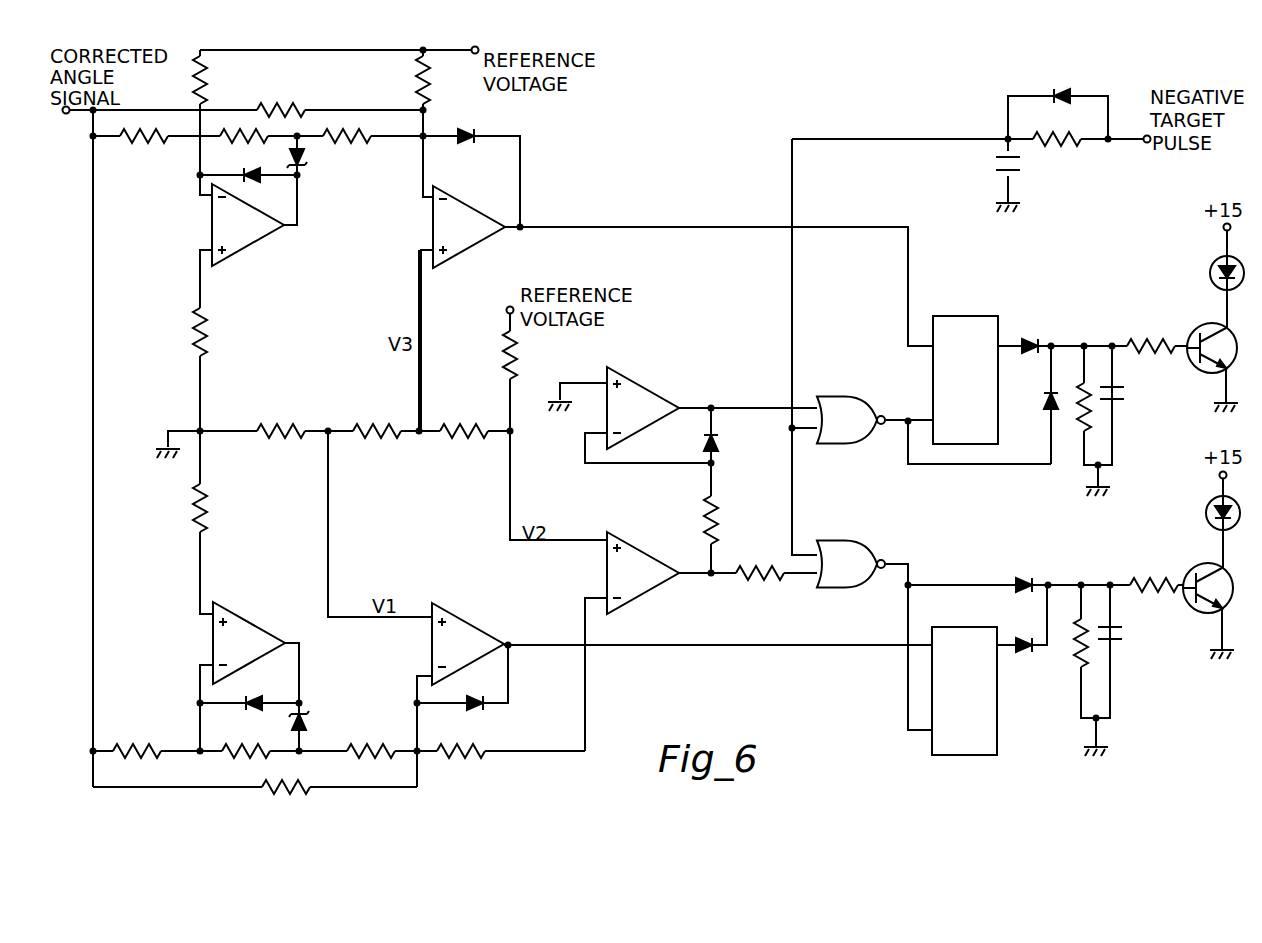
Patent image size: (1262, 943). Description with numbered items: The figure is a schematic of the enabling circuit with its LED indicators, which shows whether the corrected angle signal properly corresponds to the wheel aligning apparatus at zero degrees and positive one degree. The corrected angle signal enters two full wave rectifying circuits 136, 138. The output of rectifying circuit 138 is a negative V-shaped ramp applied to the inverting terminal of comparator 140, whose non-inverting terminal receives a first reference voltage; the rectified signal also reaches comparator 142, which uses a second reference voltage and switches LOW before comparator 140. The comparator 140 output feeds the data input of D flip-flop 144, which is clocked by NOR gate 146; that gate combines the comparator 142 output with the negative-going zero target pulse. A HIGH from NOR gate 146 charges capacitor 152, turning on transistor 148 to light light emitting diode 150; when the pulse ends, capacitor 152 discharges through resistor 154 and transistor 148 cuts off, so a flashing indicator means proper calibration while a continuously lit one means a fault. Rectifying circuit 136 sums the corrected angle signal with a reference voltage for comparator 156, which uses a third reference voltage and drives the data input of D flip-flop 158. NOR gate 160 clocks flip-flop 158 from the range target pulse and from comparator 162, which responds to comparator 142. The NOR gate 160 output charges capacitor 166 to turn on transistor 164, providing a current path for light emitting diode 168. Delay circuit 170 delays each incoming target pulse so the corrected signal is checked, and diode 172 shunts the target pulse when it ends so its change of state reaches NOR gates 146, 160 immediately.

The full wave rectifying circuit 136 is at (185, 203).
The full wave rectifying circuit 138 is at (191, 636).
The comparator 140 is at (460, 613).
The comparator 142 is at (648, 594).
The D flip-flop 144 is at (985, 755).
The NOR gate 146 is at (875, 513).
The transistor 148 is at (1185, 575).
The light emitting diode 150 is at (1206, 514).
The capacitor 152 is at (1120, 626).
The resistor 154 is at (1070, 645).
The comparator 156 is at (502, 178).
The D flip-flop 158 is at (960, 316).
The NOR gate 160 is at (855, 365).
The comparator 162 is at (640, 386).
The transistor 164 is at (1204, 328).
The capacitor 166 is at (1120, 387).
The light emitting diode 168 is at (1211, 262).
The delay circuit 170 is at (991, 146).
The diode 172 is at (1060, 90).